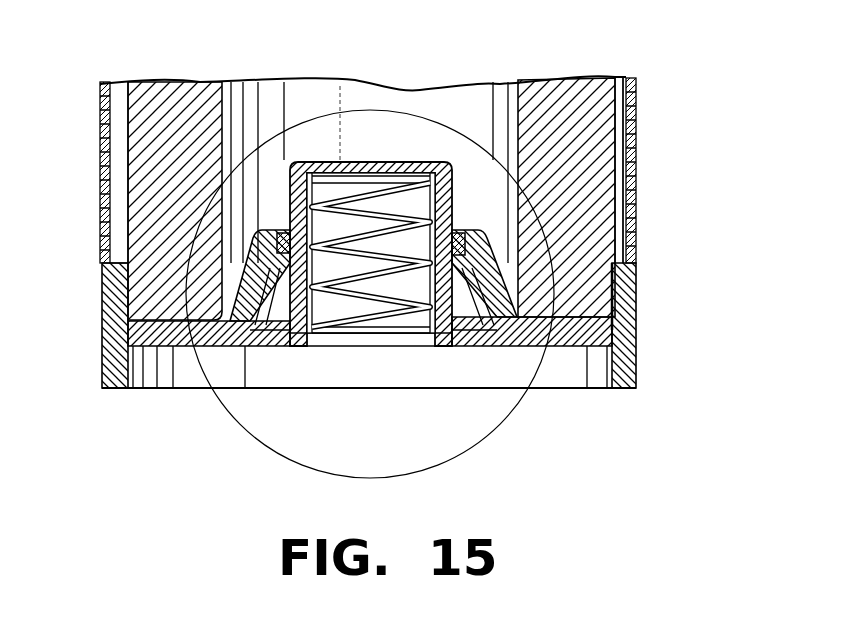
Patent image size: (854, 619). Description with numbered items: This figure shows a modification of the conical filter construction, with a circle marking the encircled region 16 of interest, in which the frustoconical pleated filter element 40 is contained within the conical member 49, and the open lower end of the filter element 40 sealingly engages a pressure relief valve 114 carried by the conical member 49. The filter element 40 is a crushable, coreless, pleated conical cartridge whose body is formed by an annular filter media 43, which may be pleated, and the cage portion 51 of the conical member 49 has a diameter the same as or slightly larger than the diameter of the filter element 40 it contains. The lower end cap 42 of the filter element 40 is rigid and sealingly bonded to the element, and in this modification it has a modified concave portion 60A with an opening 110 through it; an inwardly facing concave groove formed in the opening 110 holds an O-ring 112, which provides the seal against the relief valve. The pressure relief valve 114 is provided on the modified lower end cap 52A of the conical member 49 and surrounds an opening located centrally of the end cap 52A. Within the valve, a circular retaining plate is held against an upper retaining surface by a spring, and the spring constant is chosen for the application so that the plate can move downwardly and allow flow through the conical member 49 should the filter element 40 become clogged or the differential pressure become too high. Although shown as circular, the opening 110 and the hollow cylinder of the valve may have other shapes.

The valve assembly 16 is at (467, 452).
The conical filter element 40 is at (517, 113).
The lower end cap 42 is at (175, 325).
The filter media 43 is at (200, 123).
The conical member 49 is at (636, 104).
The cage portion 51 is at (638, 160).
The modified lower end cap 52A is at (552, 343).
The modified concave portion 60A is at (250, 265).
The opening 110 is at (443, 212).
The O-ring 112 is at (488, 240).
The pressure relief valve 114 is at (427, 161).